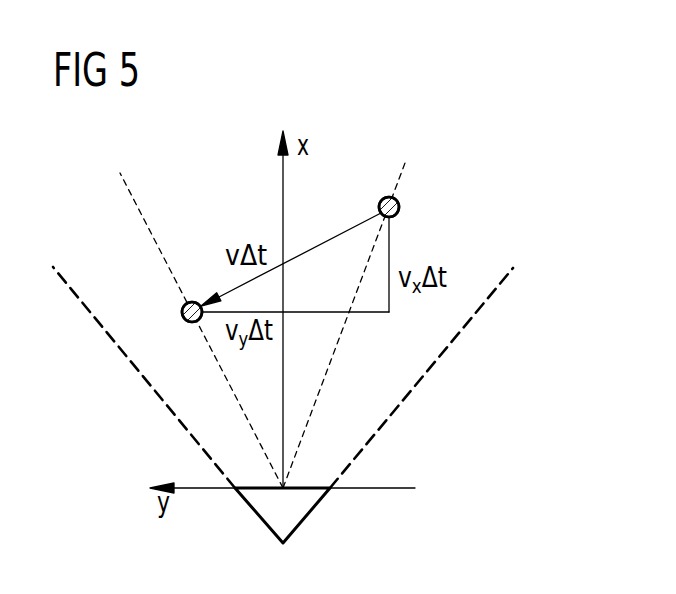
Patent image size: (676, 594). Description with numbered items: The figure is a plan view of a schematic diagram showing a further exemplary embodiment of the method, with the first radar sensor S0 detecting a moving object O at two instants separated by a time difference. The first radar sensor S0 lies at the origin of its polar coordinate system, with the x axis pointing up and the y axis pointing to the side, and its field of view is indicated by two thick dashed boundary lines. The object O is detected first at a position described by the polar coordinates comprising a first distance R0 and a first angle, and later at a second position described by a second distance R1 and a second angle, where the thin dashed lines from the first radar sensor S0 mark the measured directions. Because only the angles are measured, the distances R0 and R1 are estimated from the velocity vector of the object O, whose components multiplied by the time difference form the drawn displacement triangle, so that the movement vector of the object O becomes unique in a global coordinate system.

The object O is at (288, 234).
The distance of the object at a first measurement R0 is at (433, 199).
The distance of the object at a second measurement R1 is at (144, 297).
The first radar sensor S0 is at (298, 515).